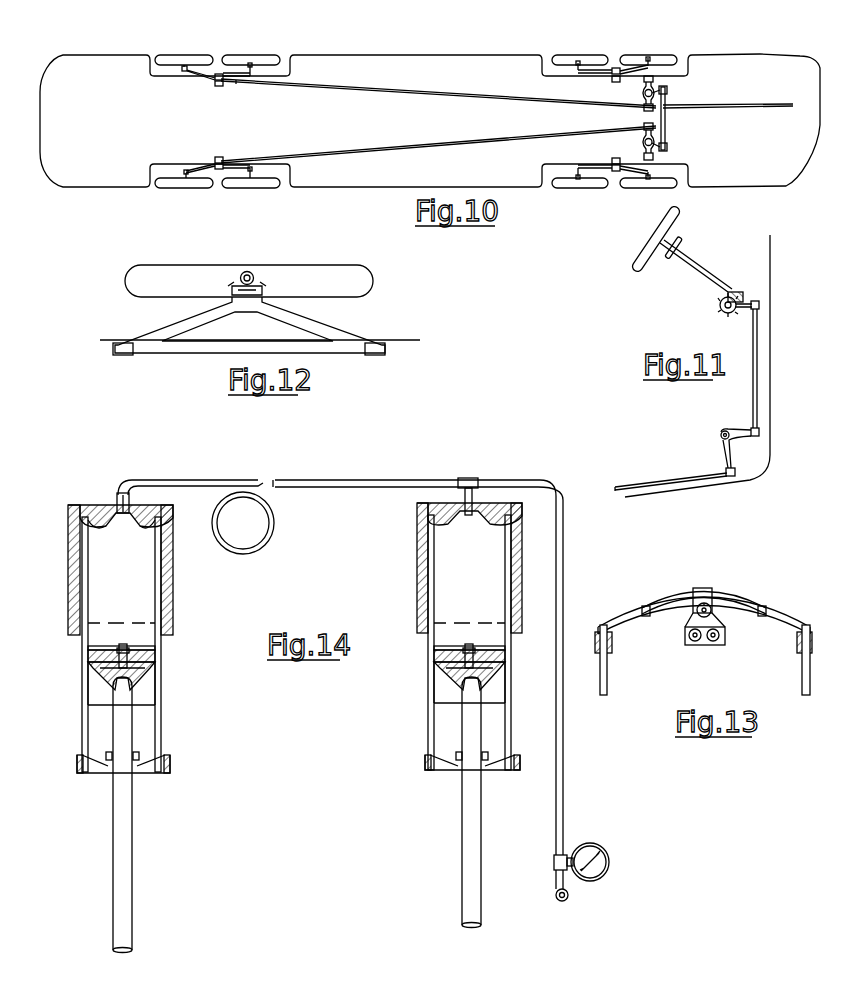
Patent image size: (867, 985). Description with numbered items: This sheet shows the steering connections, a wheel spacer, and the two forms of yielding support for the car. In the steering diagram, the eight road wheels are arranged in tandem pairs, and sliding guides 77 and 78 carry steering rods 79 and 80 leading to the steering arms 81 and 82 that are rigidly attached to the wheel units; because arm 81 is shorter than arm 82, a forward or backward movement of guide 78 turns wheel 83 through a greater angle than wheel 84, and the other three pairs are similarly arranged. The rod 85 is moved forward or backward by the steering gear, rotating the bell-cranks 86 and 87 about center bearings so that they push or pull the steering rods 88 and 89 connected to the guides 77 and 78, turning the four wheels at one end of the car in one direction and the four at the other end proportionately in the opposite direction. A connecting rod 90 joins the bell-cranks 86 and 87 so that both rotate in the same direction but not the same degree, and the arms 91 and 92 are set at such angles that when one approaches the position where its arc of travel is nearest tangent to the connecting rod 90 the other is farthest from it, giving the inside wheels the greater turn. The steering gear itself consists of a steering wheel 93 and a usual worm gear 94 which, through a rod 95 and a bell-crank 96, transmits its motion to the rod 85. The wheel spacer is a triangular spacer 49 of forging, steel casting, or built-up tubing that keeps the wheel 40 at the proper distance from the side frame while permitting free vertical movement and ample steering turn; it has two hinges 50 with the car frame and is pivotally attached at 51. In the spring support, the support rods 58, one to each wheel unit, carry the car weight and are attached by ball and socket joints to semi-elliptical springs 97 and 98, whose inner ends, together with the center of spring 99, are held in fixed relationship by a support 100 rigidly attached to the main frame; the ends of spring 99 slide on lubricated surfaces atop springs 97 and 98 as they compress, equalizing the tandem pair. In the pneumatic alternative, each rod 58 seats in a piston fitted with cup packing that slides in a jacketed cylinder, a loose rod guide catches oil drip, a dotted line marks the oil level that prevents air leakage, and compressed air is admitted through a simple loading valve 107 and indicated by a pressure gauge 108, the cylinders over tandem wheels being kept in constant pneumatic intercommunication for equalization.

In FIG. 12, the wheel 40 is at (184, 265).
In FIG. 12, the spacer 49 is at (312, 328).
In FIG. 12, the hinges 50 is at (124, 356).
In FIG. 12, the pivotal attachment 51 is at (262, 290).
In FIG. 13, the support rod 58 is at (607, 674).
In FIG. 10, the sliding guide 77 is at (614, 68).
In FIG. 10, the sliding guide 78 is at (219, 74).
In FIG. 10, the steering rod 79 is at (197, 76).
In FIG. 10, the steering rod 80 is at (237, 80).
In FIG. 10, the steering arm 81 is at (180, 68).
In FIG. 10, the steering arm 82 is at (253, 70).
In FIG. 10, the wheel 83 is at (175, 60).
In FIG. 10, the wheel 84 is at (267, 60).
In FIG. 10, the rod 85 is at (734, 105).
In FIG. 11, the rod 85 is at (668, 478).
In FIG. 10, the bell-crank 86 is at (645, 89).
In FIG. 10, the bell-crank 87 is at (645, 147).
In FIG. 10, the steering rod 88 is at (412, 111).
In FIG. 10, the steering rod 89 is at (632, 72).
In FIG. 10, the connecting rod 90 is at (666, 125).
In FIG. 10, the arm 91 is at (664, 99).
In FIG. 10, the arm 92 is at (664, 139).
In FIG. 11, the steering wheel 93 is at (640, 268).
In FIG. 11, the worm gear 94 is at (738, 292).
In FIG. 11, the rod 95 is at (760, 365).
In FIG. 11, the bell-crank 96 is at (742, 434).
In FIG. 13, the semi-elliptical spring 97 is at (622, 620).
In FIG. 13, the semi-elliptical spring 98 is at (780, 622).
In FIG. 13, the spring 99 is at (683, 598).
In FIG. 13, the support 100 is at (715, 606).
In FIG. 14, the loading valve 107 is at (568, 898).
In FIG. 14, the pressure gauge 108 is at (588, 855).